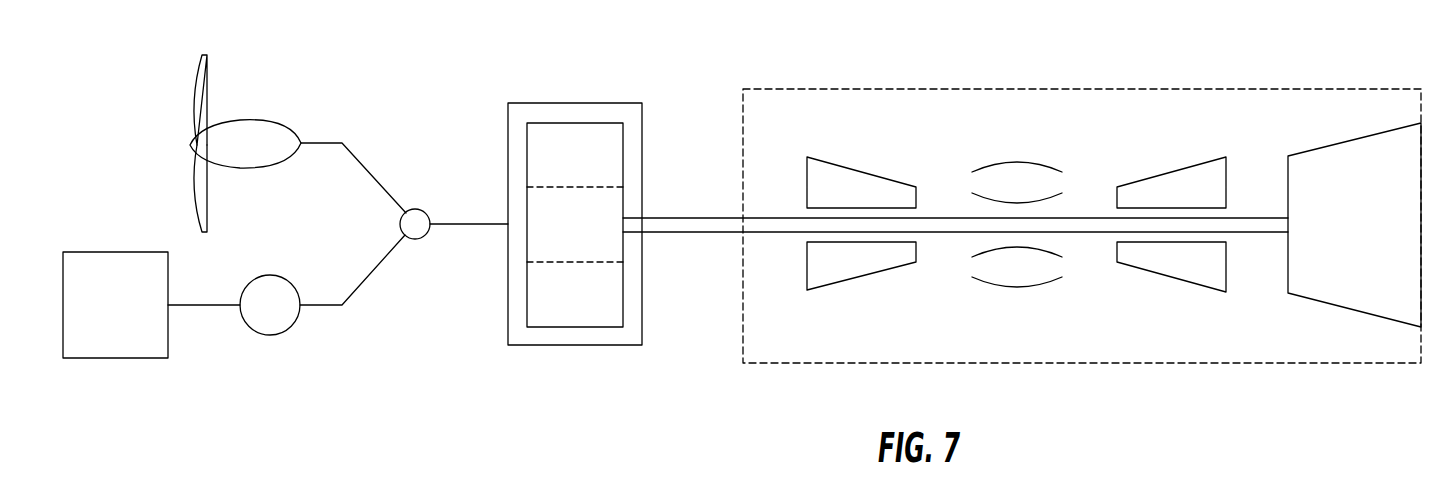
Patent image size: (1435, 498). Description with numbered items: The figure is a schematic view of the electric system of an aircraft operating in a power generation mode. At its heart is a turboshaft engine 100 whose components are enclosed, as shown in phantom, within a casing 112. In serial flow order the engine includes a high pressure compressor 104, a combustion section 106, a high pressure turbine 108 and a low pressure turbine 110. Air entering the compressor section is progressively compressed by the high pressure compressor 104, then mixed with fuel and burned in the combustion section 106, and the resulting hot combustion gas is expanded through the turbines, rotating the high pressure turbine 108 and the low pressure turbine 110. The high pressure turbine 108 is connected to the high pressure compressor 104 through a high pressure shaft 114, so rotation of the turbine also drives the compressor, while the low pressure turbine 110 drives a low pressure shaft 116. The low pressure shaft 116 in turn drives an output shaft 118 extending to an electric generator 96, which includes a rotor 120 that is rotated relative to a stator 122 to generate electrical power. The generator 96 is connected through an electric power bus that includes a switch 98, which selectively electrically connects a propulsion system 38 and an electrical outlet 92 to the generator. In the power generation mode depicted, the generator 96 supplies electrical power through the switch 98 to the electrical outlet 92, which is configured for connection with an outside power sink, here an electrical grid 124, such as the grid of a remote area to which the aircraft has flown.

The propulsion system 38 is at (268, 80).
The electrical outlet 92 is at (291, 329).
The electric generator 96 is at (658, 114).
The switch 98 is at (412, 204).
The turboshaft engine 100 is at (1133, 62).
The high pressure compressor 104 is at (848, 185).
The combustion section 106 is at (1054, 300).
The high pressure turbine 108 is at (1203, 175).
The low pressure turbine 110 is at (1360, 178).
The casing 112 is at (1002, 89).
The high pressure shaft 114 is at (942, 205).
The low pressure shaft 116 is at (782, 235).
The output shaft 118 is at (680, 235).
The rotor 120 is at (535, 248).
The stator 122 is at (527, 155).
The electrical grid 124 is at (110, 358).